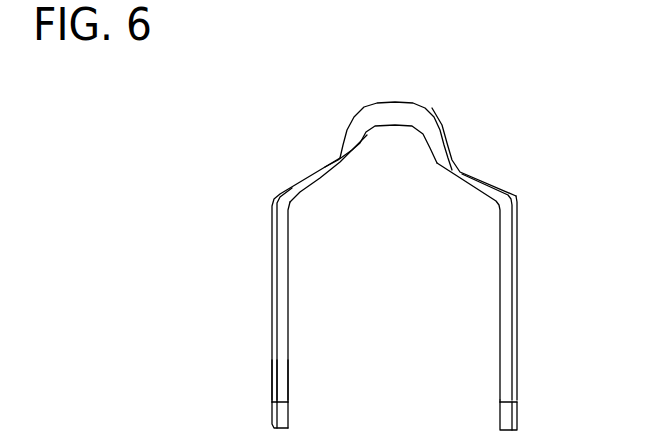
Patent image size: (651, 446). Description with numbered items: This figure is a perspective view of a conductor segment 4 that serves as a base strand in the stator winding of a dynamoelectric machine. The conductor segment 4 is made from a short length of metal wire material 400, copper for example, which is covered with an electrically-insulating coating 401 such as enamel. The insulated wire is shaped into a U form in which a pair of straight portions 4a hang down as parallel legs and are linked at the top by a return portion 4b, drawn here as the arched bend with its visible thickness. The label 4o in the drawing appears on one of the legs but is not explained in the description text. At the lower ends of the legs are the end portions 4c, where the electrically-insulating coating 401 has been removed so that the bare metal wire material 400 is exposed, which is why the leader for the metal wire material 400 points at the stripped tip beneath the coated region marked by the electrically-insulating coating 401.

The conductor segment 4 is at (266, 97).
The straight portions 4a is at (500, 285).
The return portion 4b is at (453, 142).
The end portions 4c is at (289, 423).
The leg 4o is at (286, 291).
The metal wire material 400 is at (270, 412).
The electrically-insulating coating 401 is at (273, 374).